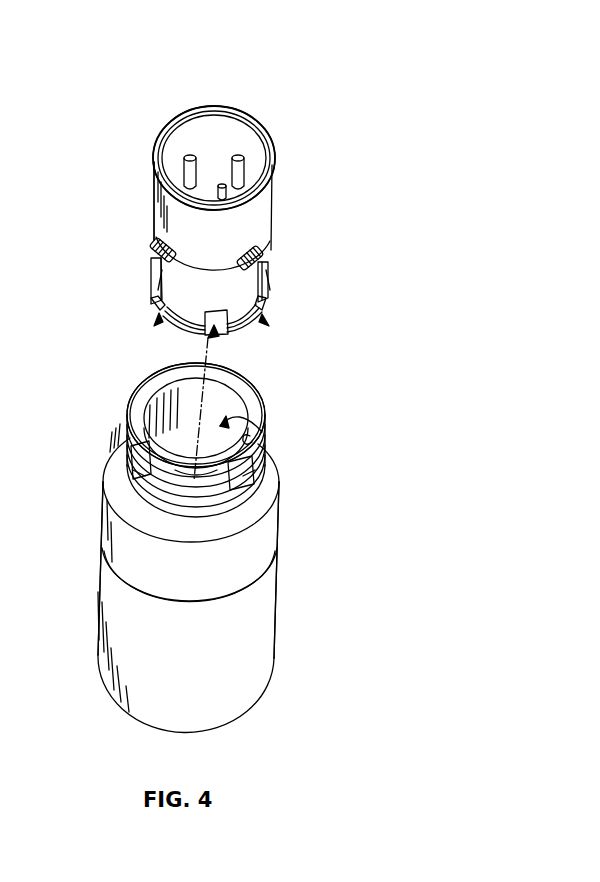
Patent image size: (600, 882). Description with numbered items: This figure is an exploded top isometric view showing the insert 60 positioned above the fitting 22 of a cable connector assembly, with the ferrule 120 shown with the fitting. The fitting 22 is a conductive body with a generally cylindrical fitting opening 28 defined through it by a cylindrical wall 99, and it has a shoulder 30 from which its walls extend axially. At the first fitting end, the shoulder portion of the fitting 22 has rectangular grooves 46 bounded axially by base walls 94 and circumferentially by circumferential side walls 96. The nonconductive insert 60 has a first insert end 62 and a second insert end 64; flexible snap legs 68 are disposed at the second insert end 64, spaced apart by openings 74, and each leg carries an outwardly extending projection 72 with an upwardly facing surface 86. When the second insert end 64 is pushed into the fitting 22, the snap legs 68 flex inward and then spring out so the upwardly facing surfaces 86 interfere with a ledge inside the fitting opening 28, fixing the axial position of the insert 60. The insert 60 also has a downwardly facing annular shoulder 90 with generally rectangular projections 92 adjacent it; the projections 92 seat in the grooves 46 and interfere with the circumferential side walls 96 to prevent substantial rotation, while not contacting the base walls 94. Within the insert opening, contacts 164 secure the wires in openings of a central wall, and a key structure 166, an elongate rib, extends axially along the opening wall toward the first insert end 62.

The fitting 22 is at (278, 524).
The fitting opening 28 is at (262, 432).
The shoulder 30 is at (108, 552).
The grooves 46 is at (138, 471).
The insert 60 is at (273, 202).
The first insert end 62 is at (270, 142).
The second insert end 64 is at (268, 272).
The snap legs 68 is at (270, 283).
The outwardly extending projection 72 is at (158, 305).
The openings 74 is at (156, 322).
The upwardly facing surfaces 86 is at (158, 280).
The annular shoulder 90 is at (153, 200).
The projections 92 is at (262, 256).
The base walls 94 is at (135, 483).
The circumferential side walls 96 is at (136, 467).
The cylindrical wall 99 is at (263, 445).
The ferrule 120 is at (266, 660).
The contacts 164 is at (218, 190).
The key structure 166 is at (228, 192).